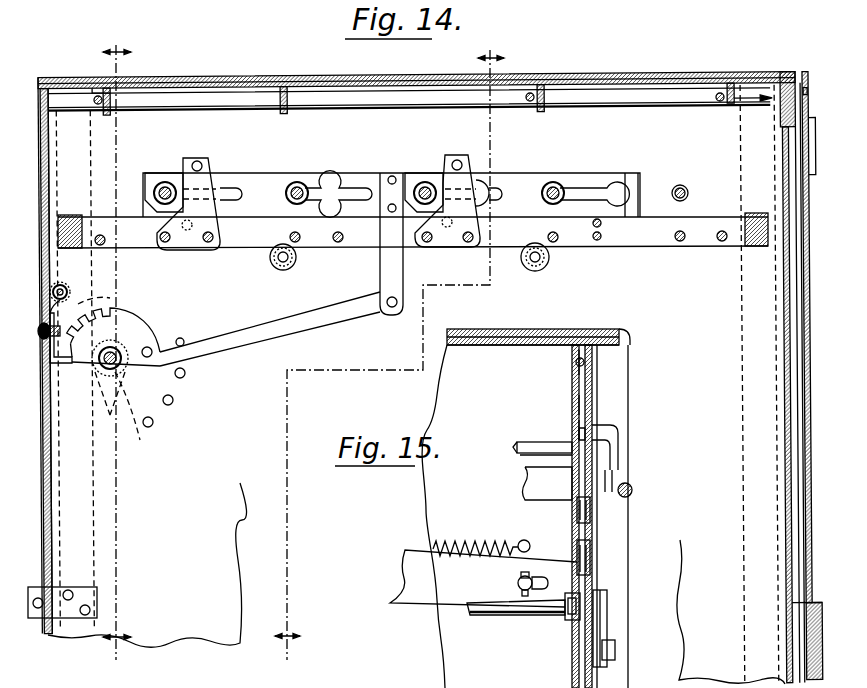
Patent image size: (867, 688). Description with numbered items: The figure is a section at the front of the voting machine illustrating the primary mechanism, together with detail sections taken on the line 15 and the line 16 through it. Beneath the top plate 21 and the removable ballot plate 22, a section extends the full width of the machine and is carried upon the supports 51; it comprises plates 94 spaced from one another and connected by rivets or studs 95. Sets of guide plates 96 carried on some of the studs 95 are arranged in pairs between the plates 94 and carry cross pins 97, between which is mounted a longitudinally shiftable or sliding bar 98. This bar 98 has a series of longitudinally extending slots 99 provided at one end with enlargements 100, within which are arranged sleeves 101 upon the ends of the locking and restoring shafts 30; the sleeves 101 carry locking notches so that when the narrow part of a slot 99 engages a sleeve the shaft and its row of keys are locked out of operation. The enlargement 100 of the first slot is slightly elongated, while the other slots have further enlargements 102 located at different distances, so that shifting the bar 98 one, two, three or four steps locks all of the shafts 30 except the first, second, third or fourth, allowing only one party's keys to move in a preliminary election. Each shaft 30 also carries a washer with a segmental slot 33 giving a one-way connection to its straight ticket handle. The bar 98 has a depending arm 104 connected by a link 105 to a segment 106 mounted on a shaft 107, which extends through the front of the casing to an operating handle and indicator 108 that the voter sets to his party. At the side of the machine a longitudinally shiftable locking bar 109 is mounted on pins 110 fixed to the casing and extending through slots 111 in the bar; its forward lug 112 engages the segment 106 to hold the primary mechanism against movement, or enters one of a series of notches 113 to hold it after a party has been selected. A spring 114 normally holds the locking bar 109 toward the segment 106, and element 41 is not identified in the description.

In FIG. 14, the section line 15 is at (390, 350).
In FIG. 14, the section line 16 is at (117, 346).
In FIG. 14, the top plate 21 is at (404, 77).
In FIG. 15, the top plate 21 is at (498, 338).
In FIG. 14, the ballot plate 22 is at (330, 77).
In FIG. 15, the ballot plate 22 is at (515, 330).
In FIG. 14, the locking and restoring shaft 30 is at (155, 192).
In FIG. 15, the locking and restoring shaft 30 is at (525, 441).
In FIG. 15, the segmental slot 33 is at (620, 428).
In FIG. 15, the lever knob 41 is at (627, 483).
In FIG. 14, the support 51 is at (72, 212).
In FIG. 15, the support 51 is at (522, 482).
In FIG. 14, the plate 94 is at (102, 233).
In FIG. 15, the plate 94 is at (575, 385).
In FIG. 14, the stud 95 is at (100, 114).
In FIG. 15, the stud 95 is at (577, 498).
In FIG. 14, the guide plate 96 is at (235, 200).
In FIG. 15, the guide plate 96 is at (577, 402).
In FIG. 14, the cross pin 97 is at (199, 165).
In FIG. 15, the cross pin 97 is at (580, 408).
In FIG. 14, the sliding bar 98 is at (278, 173).
In FIG. 15, the sliding bar 98 is at (577, 428).
In FIG. 14, the slot 99 is at (230, 188).
In FIG. 14, the enlargement 100 is at (167, 183).
In FIG. 14, the sleeve 101 is at (158, 186).
In FIG. 15, the sleeve 101 is at (560, 455).
In FIG. 14, the enlargement 102 is at (335, 180).
In FIG. 14, the depending arm 104 is at (380, 270).
In FIG. 15, the depending arm 104 is at (577, 527).
In FIG. 14, the link 105 is at (258, 326).
In FIG. 15, the link 105 is at (577, 575).
In FIG. 14, the segment 106 is at (135, 322).
In FIG. 15, the segment 106 is at (575, 580).
In FIG. 14, the shaft 107 is at (118, 366).
In FIG. 15, the shaft 107 is at (530, 605).
In FIG. 14, the operating handle and indicator 108 is at (132, 410).
In FIG. 15, the operating handle and indicator 108 is at (593, 640).
In FIG. 14, the locking bar 109 is at (62, 304).
In FIG. 15, the locking bar 109 is at (483, 578).
In FIG. 14, the pin 110 is at (40, 330).
In FIG. 15, the pin 110 is at (522, 575).
In FIG. 15, the slot 111 is at (518, 585).
In FIG. 14, the lug 112 is at (62, 364).
In FIG. 14, the notch 113 is at (108, 302).
In FIG. 14, the spring 114 is at (60, 285).
In FIG. 15, the spring 114 is at (463, 538).